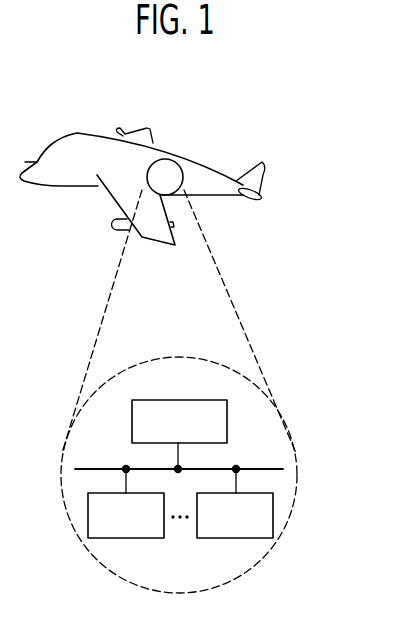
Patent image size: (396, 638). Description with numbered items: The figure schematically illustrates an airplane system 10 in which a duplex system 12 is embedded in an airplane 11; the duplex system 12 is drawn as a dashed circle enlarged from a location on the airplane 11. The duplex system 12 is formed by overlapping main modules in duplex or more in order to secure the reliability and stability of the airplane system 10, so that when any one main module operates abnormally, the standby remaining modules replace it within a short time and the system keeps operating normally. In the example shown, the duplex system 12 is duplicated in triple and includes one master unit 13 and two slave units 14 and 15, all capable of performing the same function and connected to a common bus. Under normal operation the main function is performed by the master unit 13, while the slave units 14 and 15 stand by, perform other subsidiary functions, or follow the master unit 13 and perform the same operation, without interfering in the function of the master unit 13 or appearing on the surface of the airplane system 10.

The airplane system 10 is at (296, 62).
The airplane 11 is at (213, 168).
The duplex system 12 is at (287, 423).
The master unit 13 is at (180, 400).
The slave unit 14 is at (126, 538).
The slave unit 15 is at (236, 538).